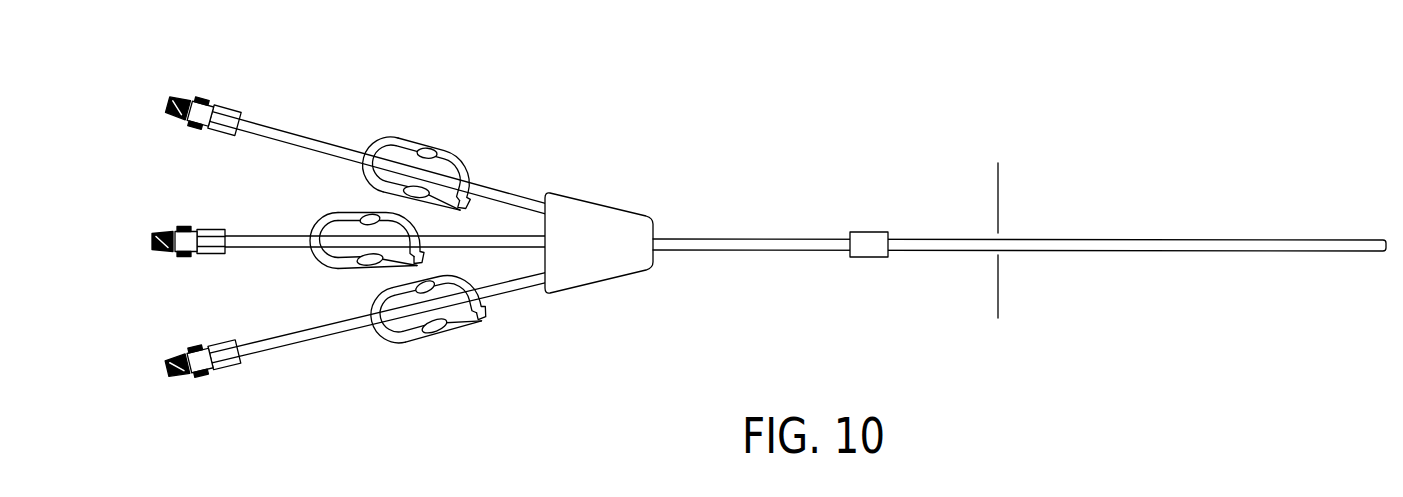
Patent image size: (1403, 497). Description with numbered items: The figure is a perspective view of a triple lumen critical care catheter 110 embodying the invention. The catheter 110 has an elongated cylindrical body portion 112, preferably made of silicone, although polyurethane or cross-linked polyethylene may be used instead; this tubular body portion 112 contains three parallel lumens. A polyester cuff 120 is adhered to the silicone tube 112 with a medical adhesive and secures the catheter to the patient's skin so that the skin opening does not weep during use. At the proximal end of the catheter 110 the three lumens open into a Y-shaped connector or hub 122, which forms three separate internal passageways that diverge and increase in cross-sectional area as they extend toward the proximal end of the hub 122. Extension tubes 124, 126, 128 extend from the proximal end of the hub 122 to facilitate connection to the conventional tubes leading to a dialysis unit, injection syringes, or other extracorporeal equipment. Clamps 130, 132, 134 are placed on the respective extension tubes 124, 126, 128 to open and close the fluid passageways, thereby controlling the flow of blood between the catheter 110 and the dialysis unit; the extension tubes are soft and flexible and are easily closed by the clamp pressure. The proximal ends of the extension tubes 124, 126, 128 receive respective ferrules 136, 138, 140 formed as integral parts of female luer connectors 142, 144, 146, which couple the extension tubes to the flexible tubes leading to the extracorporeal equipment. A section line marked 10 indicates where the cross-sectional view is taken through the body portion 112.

The triple lumen critical care catheter 110 is at (885, 338).
The cylindrical body portion 112 is at (1206, 230).
The polyester cuff 120 is at (868, 220).
The hub 122 is at (609, 190).
The extension tube 124 is at (290, 133).
The extension tube 126 is at (283, 249).
The extension tube 128 is at (280, 352).
The clamp 130 is at (381, 137).
The clamp 132 is at (323, 213).
The clamp 134 is at (372, 350).
The ferrule 136 is at (227, 110).
The ferrule 138 is at (211, 229).
The ferrule 140 is at (222, 348).
The female luer connector 142 is at (201, 100).
The female luer connector 144 is at (178, 226).
The female luer connector 146 is at (205, 380).
The section line 10- 10 is at (1006, 173).